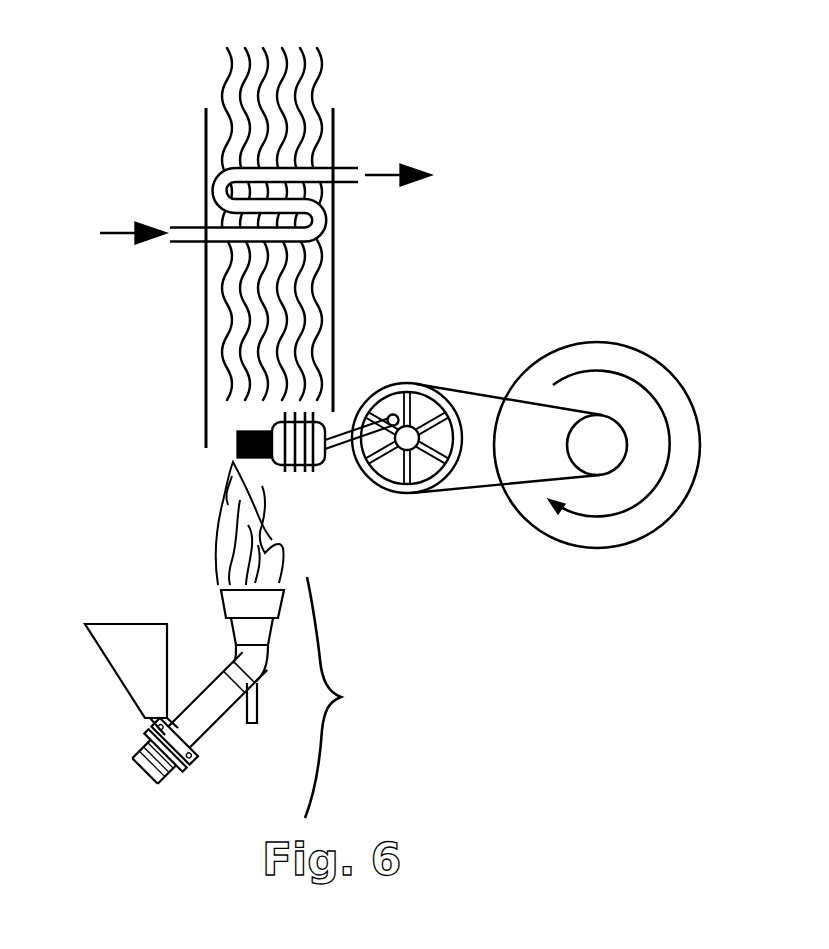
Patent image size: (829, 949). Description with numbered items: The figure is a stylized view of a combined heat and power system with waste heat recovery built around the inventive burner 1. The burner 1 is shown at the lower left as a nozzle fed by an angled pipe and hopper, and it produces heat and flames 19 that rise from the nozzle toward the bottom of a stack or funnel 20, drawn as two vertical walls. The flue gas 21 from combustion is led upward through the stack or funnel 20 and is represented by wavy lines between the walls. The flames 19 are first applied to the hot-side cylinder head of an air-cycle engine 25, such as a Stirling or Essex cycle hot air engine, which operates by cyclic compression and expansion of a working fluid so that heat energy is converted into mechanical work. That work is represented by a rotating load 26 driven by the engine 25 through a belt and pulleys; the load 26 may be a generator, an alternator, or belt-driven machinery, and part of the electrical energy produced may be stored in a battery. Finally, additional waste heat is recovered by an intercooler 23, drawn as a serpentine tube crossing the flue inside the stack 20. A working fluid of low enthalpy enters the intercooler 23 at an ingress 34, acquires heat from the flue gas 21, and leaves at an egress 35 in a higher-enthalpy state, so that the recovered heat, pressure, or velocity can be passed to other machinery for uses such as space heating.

The burner 1 is at (228, 697).
The flames 19 is at (217, 524).
The stack or funnel 20 is at (206, 135).
The flue gas 21 is at (212, 297).
The intercooler 23 is at (350, 168).
The air-cycle engine 25 is at (302, 477).
The rotating load 26 is at (648, 352).
The ingress 34 is at (112, 232).
The egress 35 is at (410, 168).